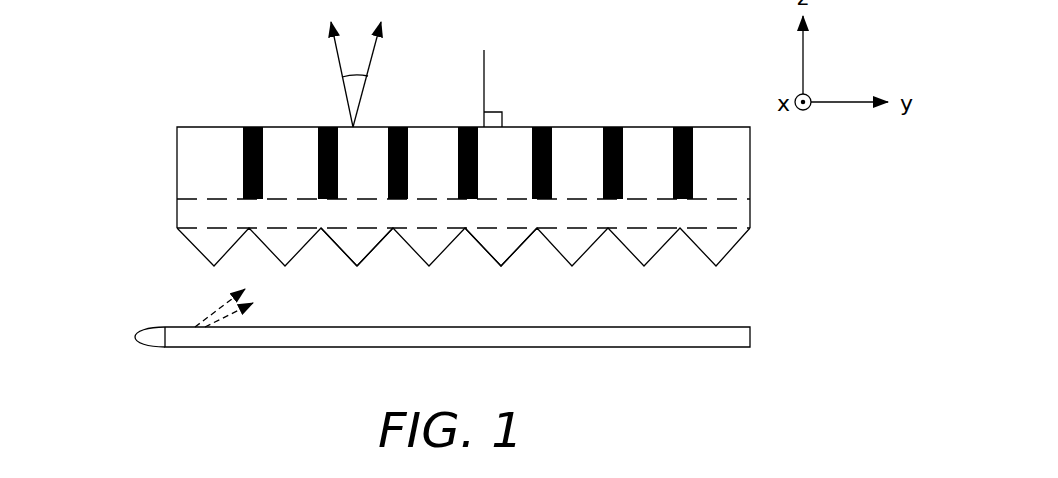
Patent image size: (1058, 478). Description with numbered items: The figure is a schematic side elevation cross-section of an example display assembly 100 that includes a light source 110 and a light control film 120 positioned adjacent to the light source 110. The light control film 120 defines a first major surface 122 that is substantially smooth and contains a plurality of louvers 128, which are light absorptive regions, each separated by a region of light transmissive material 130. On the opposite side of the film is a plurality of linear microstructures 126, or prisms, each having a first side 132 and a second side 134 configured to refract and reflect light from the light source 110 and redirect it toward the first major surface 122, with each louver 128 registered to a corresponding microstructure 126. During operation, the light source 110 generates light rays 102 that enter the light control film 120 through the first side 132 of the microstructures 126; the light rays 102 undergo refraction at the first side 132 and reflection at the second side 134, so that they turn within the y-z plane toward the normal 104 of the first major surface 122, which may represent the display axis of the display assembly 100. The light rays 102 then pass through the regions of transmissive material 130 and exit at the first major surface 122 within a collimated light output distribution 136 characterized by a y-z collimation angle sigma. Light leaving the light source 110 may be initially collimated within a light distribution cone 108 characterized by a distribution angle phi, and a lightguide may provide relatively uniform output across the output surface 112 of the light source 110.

The display assembly 100 is at (95, 124).
The light rays 102 is at (248, 308).
The normal 104 is at (485, 75).
The light distribution cone 108 is at (243, 288).
The light source 110 is at (128, 327).
The output surface 112 is at (658, 327).
The light control film 120 is at (773, 128).
The first major surface 122 is at (659, 127).
The linear microstructures 126 is at (503, 264).
The louvers 128 is at (333, 127).
The light transmissive material 130 is at (423, 142).
The first side 132 is at (337, 248).
The second side 134 is at (377, 248).
The light output distribution 136 is at (335, 30).